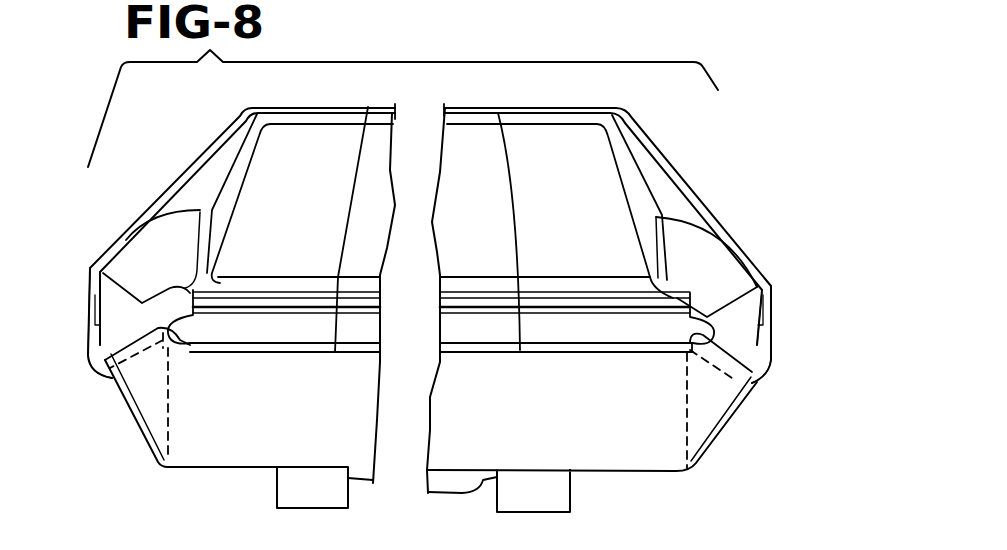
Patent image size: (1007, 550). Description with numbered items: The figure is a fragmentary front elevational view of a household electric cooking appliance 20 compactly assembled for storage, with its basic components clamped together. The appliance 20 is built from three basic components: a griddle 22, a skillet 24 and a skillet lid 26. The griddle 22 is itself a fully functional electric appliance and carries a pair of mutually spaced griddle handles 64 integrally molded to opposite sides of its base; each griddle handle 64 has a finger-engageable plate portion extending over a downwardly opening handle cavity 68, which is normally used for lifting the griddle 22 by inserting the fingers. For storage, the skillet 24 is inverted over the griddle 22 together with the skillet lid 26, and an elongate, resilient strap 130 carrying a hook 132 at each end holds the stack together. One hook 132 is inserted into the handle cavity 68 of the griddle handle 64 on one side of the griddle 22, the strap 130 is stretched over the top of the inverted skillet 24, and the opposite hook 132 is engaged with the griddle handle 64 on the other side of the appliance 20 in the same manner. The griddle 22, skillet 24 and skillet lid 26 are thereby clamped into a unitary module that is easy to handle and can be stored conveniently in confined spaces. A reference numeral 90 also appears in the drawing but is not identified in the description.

The household electric cooking appliance 20 is at (682, 158).
The griddle 22 is at (180, 472).
The skillet 24 is at (243, 176).
The skillet lid 26 is at (475, 334).
The griddle handle 64 is at (143, 407).
The handle cavity 68 is at (110, 393).
The roof reinforcement 90 is at (842, 12).
The strap 130 is at (480, 100).
The hook 132 is at (88, 340).